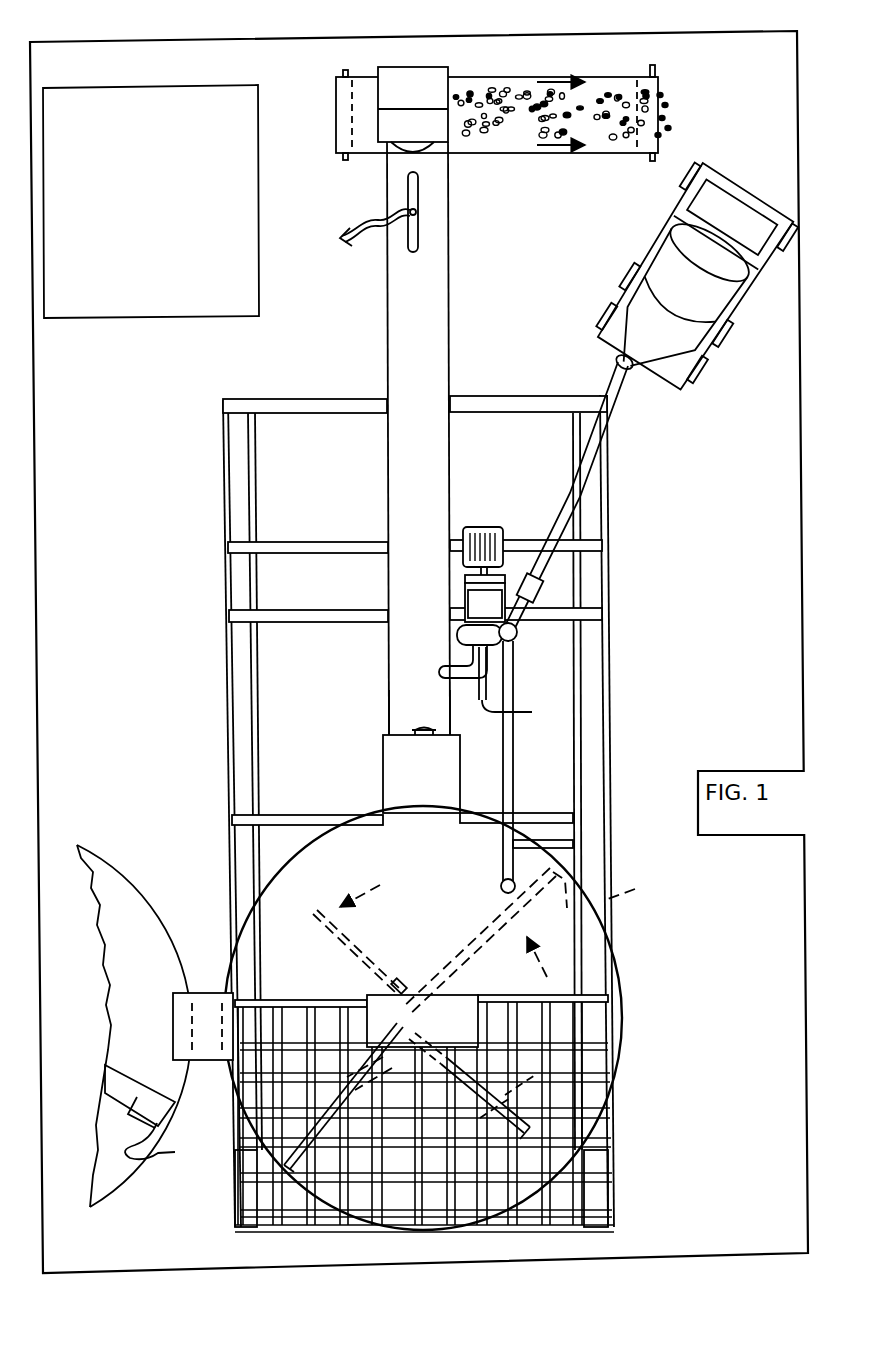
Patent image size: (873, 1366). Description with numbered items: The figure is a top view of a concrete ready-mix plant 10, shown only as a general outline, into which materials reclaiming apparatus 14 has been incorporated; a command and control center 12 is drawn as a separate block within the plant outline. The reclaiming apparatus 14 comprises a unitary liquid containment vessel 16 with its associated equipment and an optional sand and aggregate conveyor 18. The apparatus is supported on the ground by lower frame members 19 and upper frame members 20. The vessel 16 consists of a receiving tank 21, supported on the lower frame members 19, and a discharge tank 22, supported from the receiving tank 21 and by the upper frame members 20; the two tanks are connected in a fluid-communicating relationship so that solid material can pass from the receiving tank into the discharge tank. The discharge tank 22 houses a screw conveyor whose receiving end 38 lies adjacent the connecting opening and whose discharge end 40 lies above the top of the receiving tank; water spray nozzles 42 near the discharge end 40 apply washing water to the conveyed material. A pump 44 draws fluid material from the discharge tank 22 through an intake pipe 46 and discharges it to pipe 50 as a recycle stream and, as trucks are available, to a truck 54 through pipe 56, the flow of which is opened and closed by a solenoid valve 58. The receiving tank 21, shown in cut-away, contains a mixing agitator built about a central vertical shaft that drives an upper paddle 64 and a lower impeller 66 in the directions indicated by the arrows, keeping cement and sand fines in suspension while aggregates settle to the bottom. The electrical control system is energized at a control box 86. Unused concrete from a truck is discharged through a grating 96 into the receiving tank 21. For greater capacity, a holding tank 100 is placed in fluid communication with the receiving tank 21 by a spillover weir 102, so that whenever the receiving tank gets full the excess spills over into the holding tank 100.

The ready-mix plant 10 is at (88, 38).
The command and control center 12 is at (106, 318).
The reclaiming apparatus 14 is at (374, 786).
The unitary liquid containment vessel 16 is at (614, 950).
The sand and aggregate conveyor 18 is at (533, 75).
The lower frame members 19 is at (225, 770).
The upper frame members 20 is at (326, 398).
The receiving tank 21 is at (620, 980).
The discharge tank 22 is at (450, 292).
The receiving end 38 is at (388, 713).
The discharge end 40 is at (450, 164).
The water spray nozzles 42 is at (437, 230).
The pump 44 is at (503, 657).
The intake pipe 46 is at (521, 685).
The pipe 50 is at (513, 775).
The truck 54 is at (682, 392).
The pipe 56 is at (620, 432).
The solenoid valve 58 is at (545, 596).
The upper paddle 64 is at (553, 1108).
The lower impeller 66 is at (207, 1151).
The control box 86 is at (383, 758).
The grating 96 is at (595, 1040).
The holding tank 100 is at (132, 886).
The spillover weir 102 is at (193, 993).